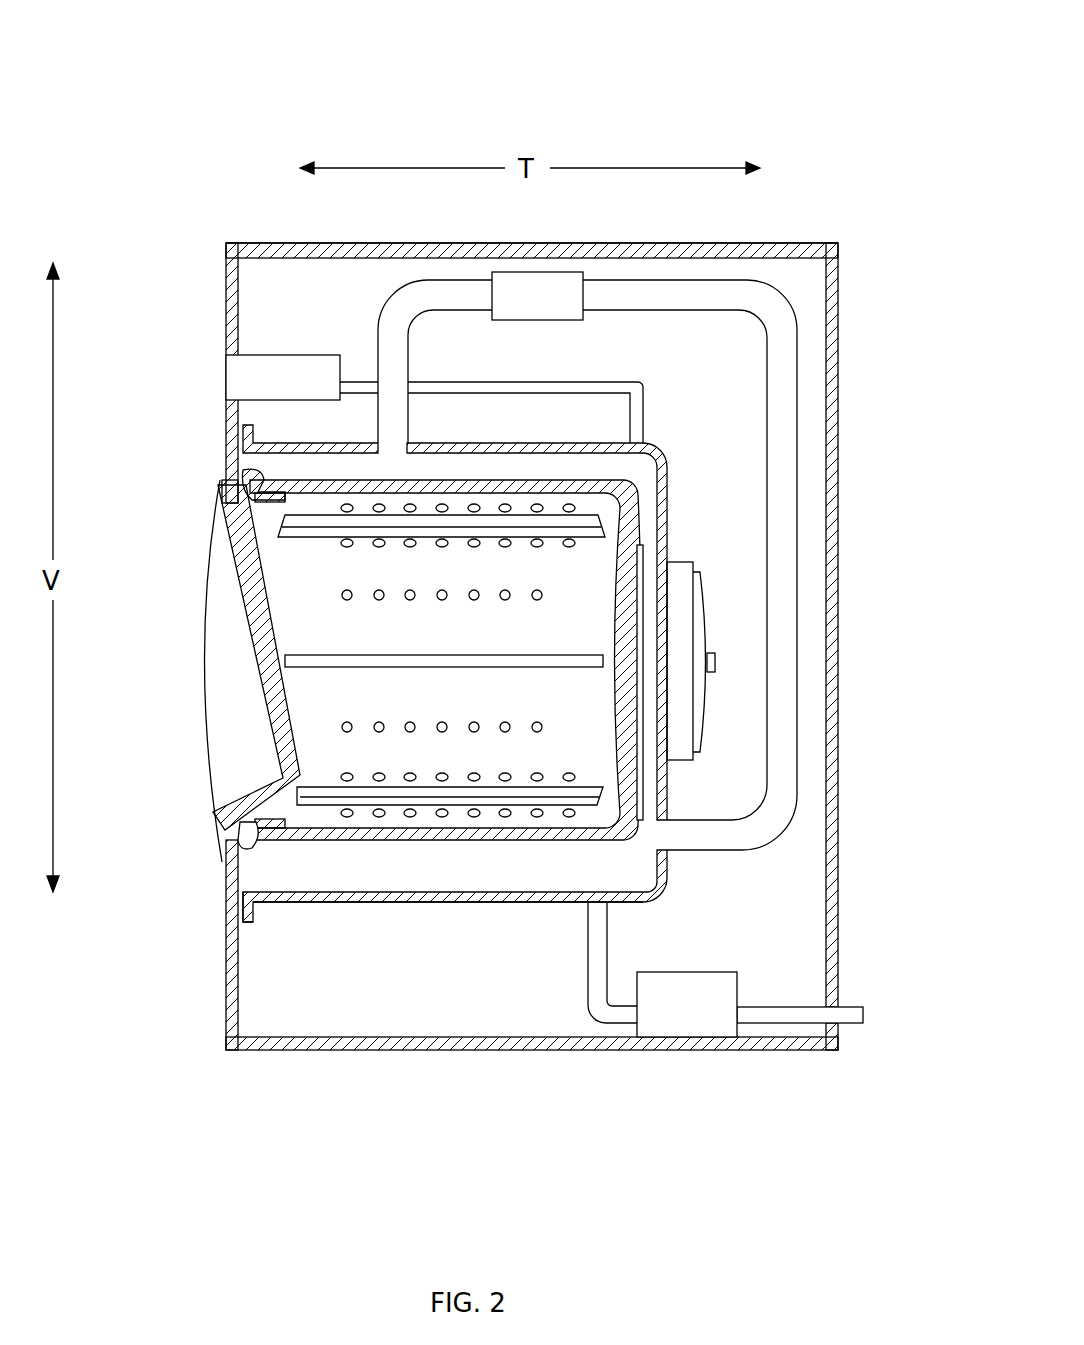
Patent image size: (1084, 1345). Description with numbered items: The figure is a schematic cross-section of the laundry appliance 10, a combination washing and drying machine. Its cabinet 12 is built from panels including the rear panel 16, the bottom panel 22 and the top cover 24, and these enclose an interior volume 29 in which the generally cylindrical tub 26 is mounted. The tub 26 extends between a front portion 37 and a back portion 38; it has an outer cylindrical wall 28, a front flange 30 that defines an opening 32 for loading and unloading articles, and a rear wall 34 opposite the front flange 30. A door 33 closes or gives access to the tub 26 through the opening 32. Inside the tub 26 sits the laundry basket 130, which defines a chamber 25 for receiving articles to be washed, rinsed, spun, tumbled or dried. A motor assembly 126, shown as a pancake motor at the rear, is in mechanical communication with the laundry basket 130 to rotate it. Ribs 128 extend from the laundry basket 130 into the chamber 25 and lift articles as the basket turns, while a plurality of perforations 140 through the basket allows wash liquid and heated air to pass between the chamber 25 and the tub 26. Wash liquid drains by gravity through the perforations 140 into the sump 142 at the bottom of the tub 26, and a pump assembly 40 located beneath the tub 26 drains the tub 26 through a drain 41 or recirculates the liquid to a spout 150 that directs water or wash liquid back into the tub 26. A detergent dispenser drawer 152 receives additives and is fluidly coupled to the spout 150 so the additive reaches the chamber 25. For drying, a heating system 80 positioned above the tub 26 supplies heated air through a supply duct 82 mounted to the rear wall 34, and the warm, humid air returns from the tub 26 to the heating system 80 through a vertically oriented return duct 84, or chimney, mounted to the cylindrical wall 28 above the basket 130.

The laundry appliance 10 is at (294, 80).
The cabinet 12 is at (840, 632).
The rear panel 16 is at (858, 500).
The bottom panel 22 is at (612, 1050).
The top cover 24 is at (775, 243).
The chamber 25 is at (305, 632).
The tub 26 is at (480, 945).
The outer cylindrical wall 28 is at (430, 900).
The interior volume 29 is at (422, 996).
The front flange 30 is at (240, 903).
The opening 32 is at (228, 510).
The door 33 is at (228, 765).
The rear wall 34 is at (667, 478).
The front portion 37 is at (218, 868).
The back portion 38 is at (640, 858).
The pump assembly 40 is at (712, 1020).
The drain 41 is at (587, 970).
The heating system 80 is at (568, 312).
The supply duct 82 is at (782, 705).
The return duct 84 is at (410, 357).
The motor assembly 126 is at (690, 705).
The ribs 128 is at (360, 668).
The laundry basket 130 is at (640, 503).
The perforations 140 is at (440, 598).
The sump 142 is at (287, 868).
The spout 150 is at (365, 378).
The detergent dispenser drawer 152 is at (272, 370).